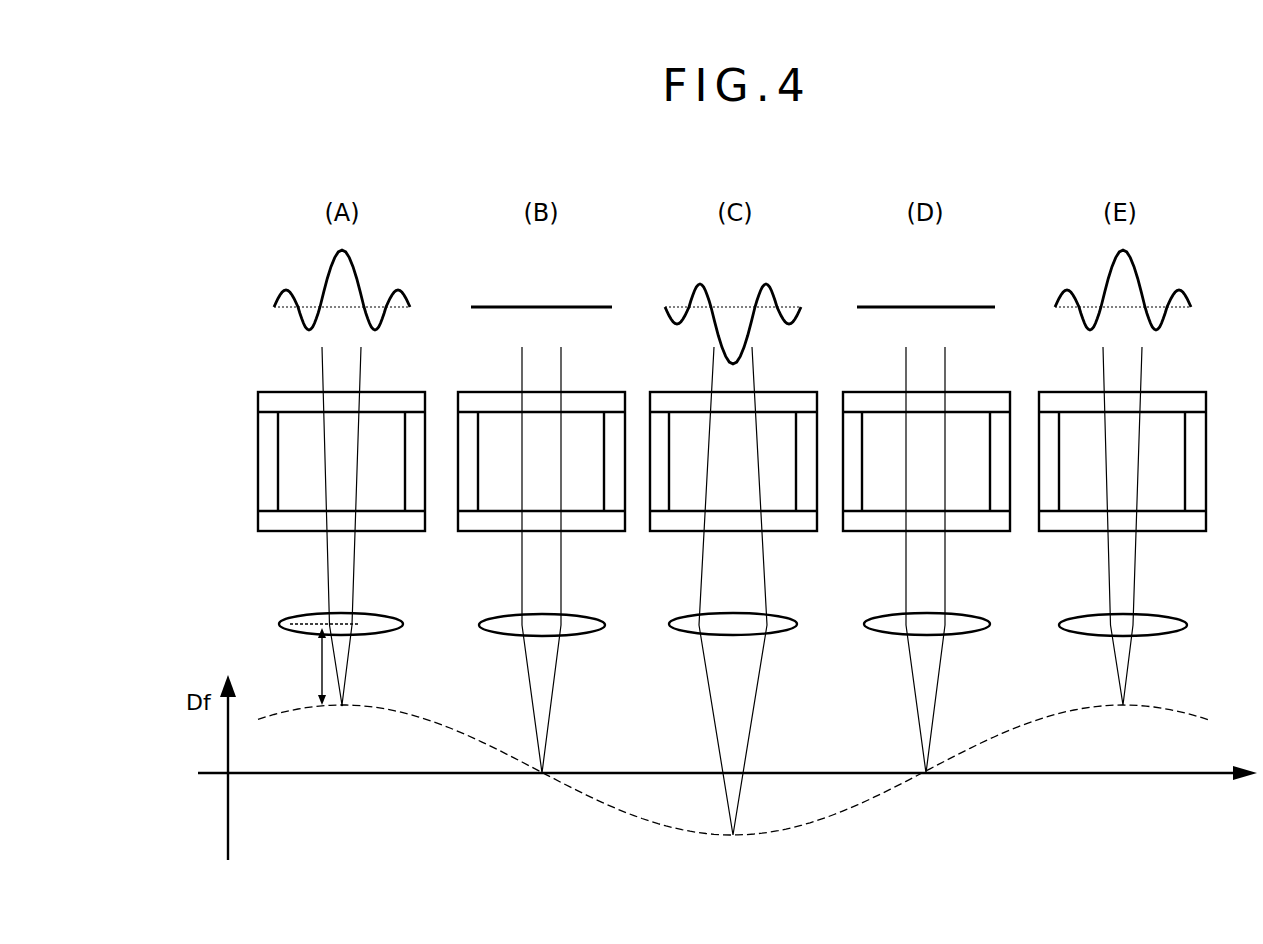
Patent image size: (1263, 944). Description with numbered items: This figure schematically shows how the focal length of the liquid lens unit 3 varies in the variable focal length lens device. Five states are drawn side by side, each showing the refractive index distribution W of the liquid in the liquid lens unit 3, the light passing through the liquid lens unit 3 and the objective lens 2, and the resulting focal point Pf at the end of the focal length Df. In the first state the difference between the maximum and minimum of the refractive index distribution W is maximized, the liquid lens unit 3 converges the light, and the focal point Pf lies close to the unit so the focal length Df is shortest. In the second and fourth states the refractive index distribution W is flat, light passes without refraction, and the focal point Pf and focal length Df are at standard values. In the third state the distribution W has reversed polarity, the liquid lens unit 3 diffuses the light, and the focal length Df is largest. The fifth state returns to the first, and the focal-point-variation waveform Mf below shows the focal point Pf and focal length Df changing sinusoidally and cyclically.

The objective lens 2 is at (268, 617).
The liquid lens unit 3 is at (236, 383).
The refractive index distribution W is at (282, 291).
The focal length Df is at (303, 666).
The focal point Pf is at (345, 704).
The focal-point-variation waveform Mf is at (1053, 713).